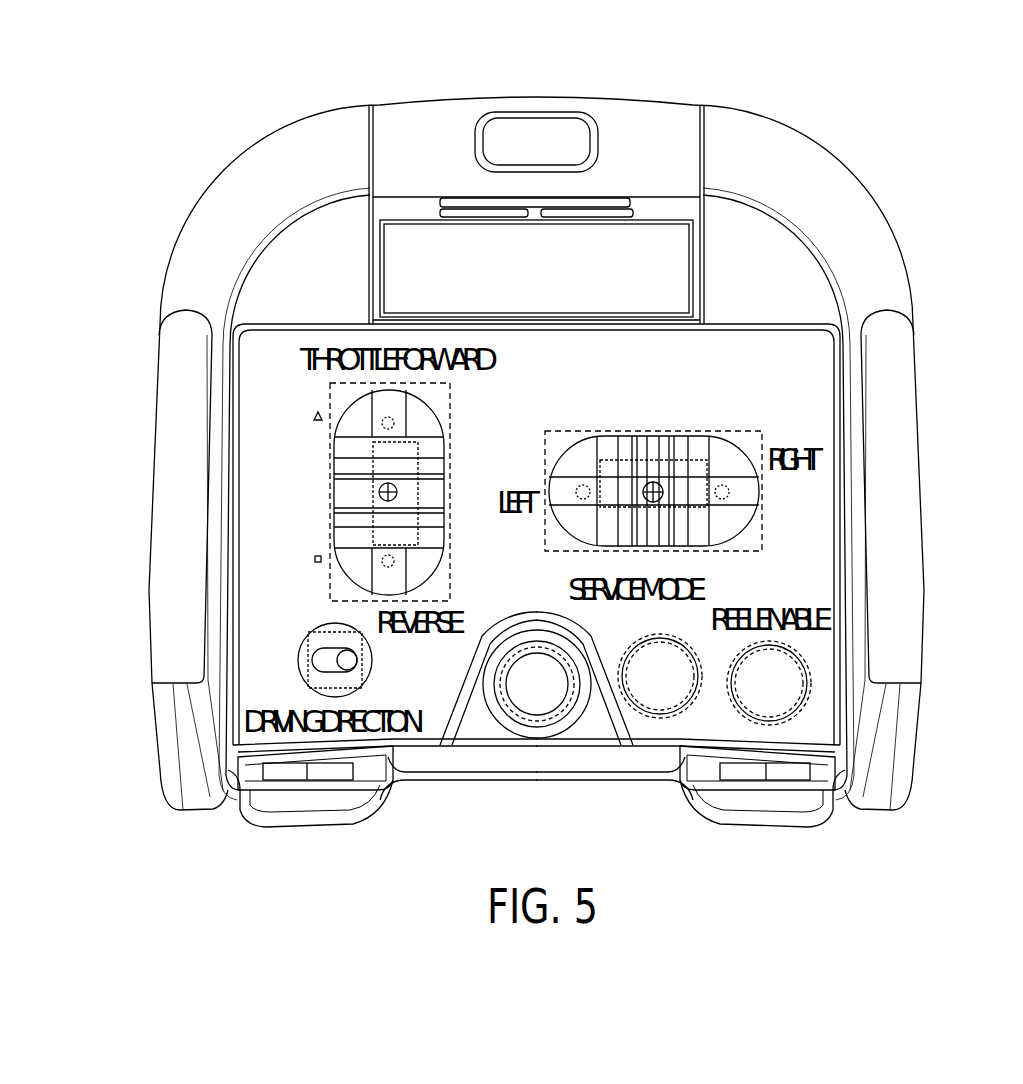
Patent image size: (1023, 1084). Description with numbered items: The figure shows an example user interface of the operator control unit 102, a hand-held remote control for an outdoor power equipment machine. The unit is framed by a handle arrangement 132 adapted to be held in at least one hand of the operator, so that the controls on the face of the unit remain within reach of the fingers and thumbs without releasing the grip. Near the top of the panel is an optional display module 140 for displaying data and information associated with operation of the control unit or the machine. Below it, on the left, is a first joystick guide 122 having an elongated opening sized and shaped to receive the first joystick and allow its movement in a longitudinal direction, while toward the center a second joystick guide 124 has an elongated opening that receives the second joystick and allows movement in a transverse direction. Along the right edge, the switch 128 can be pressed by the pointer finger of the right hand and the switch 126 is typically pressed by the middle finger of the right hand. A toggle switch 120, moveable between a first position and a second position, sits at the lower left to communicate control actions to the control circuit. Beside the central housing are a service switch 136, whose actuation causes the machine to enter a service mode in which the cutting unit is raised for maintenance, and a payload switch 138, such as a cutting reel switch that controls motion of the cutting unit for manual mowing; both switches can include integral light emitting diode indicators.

The operator control unit 102 is at (868, 157).
The toggle switch 120 is at (343, 642).
The first joystick guide 122 is at (333, 472).
The second joystick guide 124 is at (657, 428).
The switch 126 is at (852, 495).
The switch 128 is at (843, 402).
The handle arrangement 132 is at (160, 577).
The service switch 136 is at (663, 637).
The payload switch 138 is at (813, 677).
The display module 140 is at (427, 288).